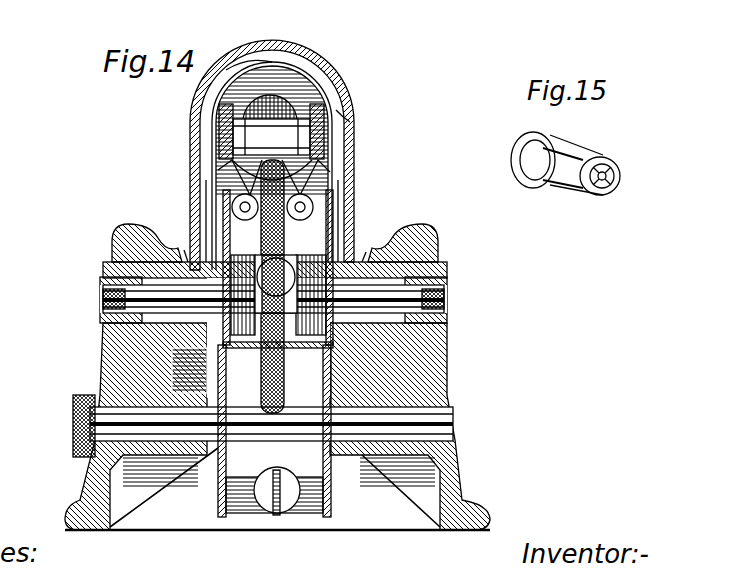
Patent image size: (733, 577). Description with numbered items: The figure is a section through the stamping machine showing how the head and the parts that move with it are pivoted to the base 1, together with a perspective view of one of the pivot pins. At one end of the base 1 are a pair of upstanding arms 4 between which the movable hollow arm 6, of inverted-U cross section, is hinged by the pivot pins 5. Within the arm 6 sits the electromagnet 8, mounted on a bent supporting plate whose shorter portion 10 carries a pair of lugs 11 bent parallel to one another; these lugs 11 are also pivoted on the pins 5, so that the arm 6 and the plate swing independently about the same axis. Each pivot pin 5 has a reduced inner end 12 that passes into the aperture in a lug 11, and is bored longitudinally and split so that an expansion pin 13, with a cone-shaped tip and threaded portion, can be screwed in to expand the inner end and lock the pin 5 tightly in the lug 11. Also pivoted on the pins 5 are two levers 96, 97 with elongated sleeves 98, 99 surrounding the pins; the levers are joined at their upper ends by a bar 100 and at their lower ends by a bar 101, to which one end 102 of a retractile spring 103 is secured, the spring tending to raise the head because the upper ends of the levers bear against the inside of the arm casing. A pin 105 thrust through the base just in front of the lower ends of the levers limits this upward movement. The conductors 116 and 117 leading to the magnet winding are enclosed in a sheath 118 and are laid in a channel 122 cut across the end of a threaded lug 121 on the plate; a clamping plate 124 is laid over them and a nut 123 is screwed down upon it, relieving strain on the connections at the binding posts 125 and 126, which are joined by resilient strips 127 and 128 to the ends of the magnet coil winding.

In FIG. 14, the base 1 is at (455, 480).
In FIG. 14, the upstanding arms 4 is at (120, 240).
In FIG. 14, the pivot pins 5 is at (108, 283).
In FIG. 15, the pivot pins 5 is at (565, 148).
In FIG. 14, the hollow arm 6 is at (333, 92).
In FIG. 14, the electromagnet 8 is at (350, 98).
In FIG. 14, the shorter portion of plate 10 is at (298, 243).
In FIG. 14, the lugs 11 is at (196, 212).
In FIG. 15, the reduced inner ends 12 is at (600, 190).
In FIG. 14, the expansion pin 13 is at (102, 298).
In FIG. 15, the expansion pin 13 is at (614, 178).
In FIG. 14, the lever 96 is at (212, 165).
In FIG. 14, the lever 97 is at (340, 182).
In FIG. 14, the elongated sleeve 98 is at (188, 250).
In FIG. 14, the elongated sleeve 99 is at (375, 250).
In FIG. 14, the bar 100 is at (267, 130).
In FIG. 14, the bar 101 is at (316, 510).
In FIG. 14, the spring end 102 is at (262, 512).
In FIG. 14, the retractile spring 103 is at (292, 515).
In FIG. 14, the pin 105 is at (97, 466).
In FIG. 14, the conductor 116 is at (214, 178).
In FIG. 14, the conductor 117 is at (337, 152).
In FIG. 14, the sheath 118 is at (245, 392).
In FIG. 14, the lug 121 is at (205, 333).
In FIG. 14, the channel 122 is at (262, 238).
In FIG. 14, the nut 123 is at (206, 345).
In FIG. 14, the clamping plate 124 is at (256, 322).
In FIG. 14, the binding post 125 is at (232, 205).
In FIG. 14, the binding post 126 is at (348, 195).
In FIG. 14, the resilient strip 127 is at (226, 68).
In FIG. 14, the resilient strip 128 is at (350, 120).